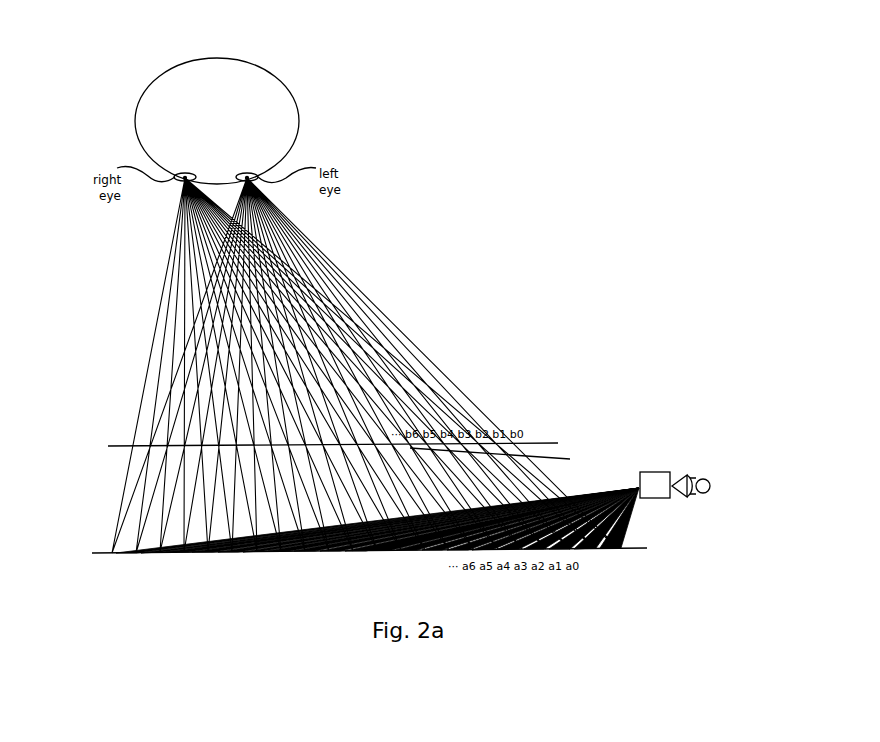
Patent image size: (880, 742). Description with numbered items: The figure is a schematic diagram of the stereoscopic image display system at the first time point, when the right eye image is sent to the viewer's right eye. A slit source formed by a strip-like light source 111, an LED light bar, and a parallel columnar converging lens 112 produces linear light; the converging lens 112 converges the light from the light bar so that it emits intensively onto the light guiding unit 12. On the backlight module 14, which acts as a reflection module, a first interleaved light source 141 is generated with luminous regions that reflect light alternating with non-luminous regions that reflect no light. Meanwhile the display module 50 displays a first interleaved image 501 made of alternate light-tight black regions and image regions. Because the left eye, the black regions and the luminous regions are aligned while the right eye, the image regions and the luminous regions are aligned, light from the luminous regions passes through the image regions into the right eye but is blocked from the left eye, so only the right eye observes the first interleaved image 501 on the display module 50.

The light guiding unit 12 is at (651, 472).
The strip-like light source 111 is at (707, 478).
The converging lens 112 is at (703, 496).
The backlight module 14 is at (100, 552).
The first interleaved light source 141 is at (357, 553).
The display module 50 is at (108, 446).
The first interleaved image 501 is at (503, 460).